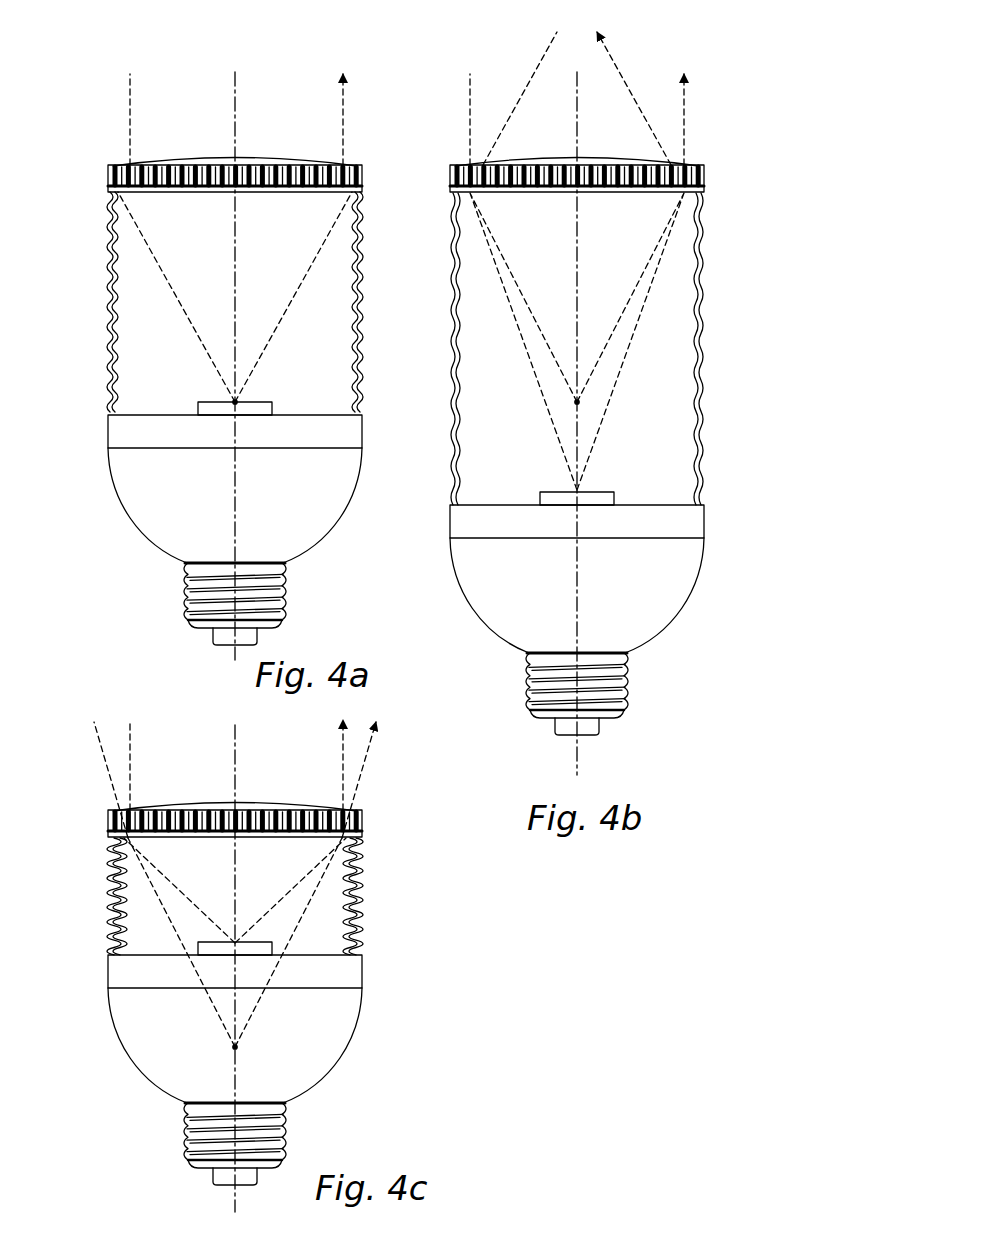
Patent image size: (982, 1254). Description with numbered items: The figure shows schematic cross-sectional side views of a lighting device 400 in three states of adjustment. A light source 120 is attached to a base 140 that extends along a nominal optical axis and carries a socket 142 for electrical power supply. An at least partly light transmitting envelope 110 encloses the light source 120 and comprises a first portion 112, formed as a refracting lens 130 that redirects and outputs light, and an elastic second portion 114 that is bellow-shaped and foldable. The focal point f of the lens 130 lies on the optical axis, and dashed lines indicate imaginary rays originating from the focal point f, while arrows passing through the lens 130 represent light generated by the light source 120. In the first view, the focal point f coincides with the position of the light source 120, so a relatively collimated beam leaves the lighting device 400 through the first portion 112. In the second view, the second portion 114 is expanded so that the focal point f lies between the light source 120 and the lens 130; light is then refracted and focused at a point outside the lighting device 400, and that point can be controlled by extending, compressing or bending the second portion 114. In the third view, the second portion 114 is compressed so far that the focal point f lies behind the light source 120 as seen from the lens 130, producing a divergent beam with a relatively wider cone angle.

In FIG. 4A, the lighting device 400 is at (92, 134).
In FIG. 4B, the lighting device 400 is at (436, 134).
In FIG. 4C, the lighting device 400 is at (92, 786).
In FIG. 4A, the envelope 110 is at (93, 339).
In FIG. 4B, the envelope 110 is at (433, 402).
In FIG. 4C, the envelope 110 is at (83, 940).
In FIG. 4A, the first portion 112 is at (362, 178).
In FIG. 4B, the first portion 112 is at (452, 177).
In FIG. 4C, the first portion 112 is at (362, 821).
In FIG. 4A, the second portion 114 is at (357, 240).
In FIG. 4B, the second portion 114 is at (457, 276).
In FIG. 4C, the second portion 114 is at (109, 886).
In FIG. 4A, the light source 120 is at (277, 412).
In FIG. 4B, the light source 120 is at (539, 503).
In FIG. 4C, the light source 120 is at (196, 952).
In FIG. 4A, the lens 130 is at (200, 158).
In FIG. 4B, the lens 130 is at (535, 158).
In FIG. 4C, the lens 130 is at (222, 805).
In FIG. 4A, the base 140 is at (337, 510).
In FIG. 4B, the base 140 is at (460, 573).
In FIG. 4C, the base 140 is at (340, 1050).
In FIG. 4A, the socket 142 is at (290, 588).
In FIG. 4B, the socket 142 is at (528, 675).
In FIG. 4C, the socket 142 is at (190, 1142).
In FIG. 4A, the focal point f is at (236, 401).
In FIG. 4B, the focal point f is at (576, 402).
In FIG. 4C, the focal point f is at (234, 1048).